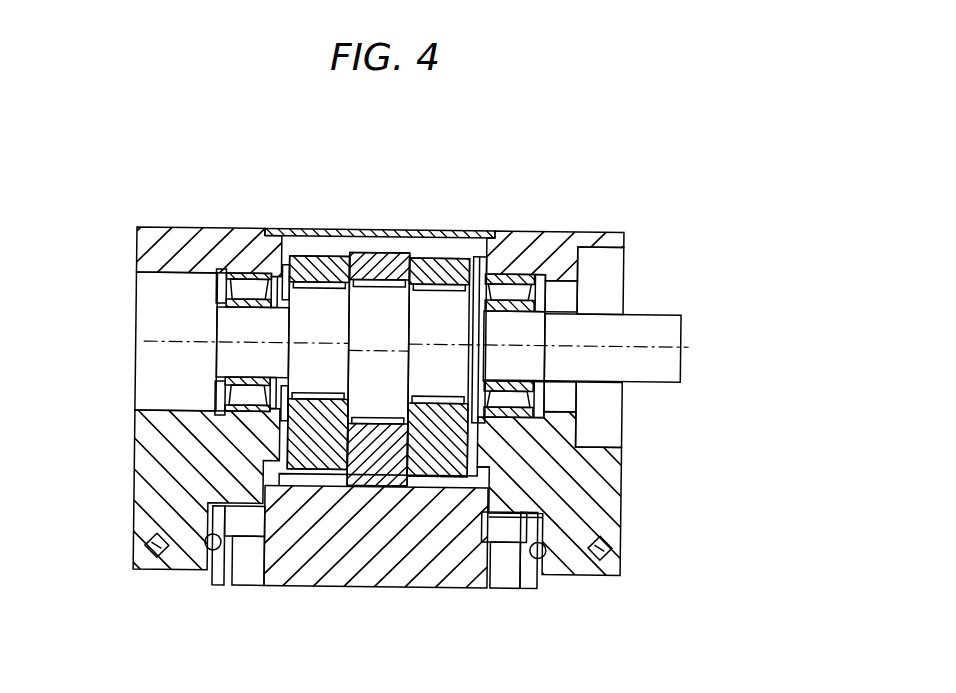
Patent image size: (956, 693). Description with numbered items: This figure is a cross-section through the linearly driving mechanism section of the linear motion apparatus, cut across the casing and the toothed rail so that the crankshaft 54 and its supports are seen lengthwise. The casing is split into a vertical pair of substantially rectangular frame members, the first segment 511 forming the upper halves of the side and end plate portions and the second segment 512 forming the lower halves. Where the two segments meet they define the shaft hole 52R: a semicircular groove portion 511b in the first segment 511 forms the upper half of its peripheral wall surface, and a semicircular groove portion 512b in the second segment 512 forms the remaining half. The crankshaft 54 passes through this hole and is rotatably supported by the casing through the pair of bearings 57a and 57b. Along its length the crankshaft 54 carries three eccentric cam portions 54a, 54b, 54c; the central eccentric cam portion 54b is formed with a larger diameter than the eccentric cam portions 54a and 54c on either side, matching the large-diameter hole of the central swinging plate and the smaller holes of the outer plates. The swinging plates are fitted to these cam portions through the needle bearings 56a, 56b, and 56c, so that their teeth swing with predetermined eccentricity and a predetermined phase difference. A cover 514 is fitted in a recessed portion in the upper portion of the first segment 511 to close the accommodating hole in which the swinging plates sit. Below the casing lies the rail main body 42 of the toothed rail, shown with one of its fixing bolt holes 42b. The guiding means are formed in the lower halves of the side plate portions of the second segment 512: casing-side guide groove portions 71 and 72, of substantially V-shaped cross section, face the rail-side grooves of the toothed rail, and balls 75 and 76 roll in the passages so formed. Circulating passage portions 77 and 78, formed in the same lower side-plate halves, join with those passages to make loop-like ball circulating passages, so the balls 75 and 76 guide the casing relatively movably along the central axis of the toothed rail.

The first segment 511 is at (147, 243).
The semicircular groove portion 511b is at (560, 283).
The second segment 512 is at (600, 467).
The semicircular groove portion 512b is at (560, 412).
The cover 514 is at (376, 232).
The shaft hole 52R is at (195, 330).
The crankshaft 54 is at (648, 333).
The eccentric cam portion 54a is at (332, 383).
The central eccentric cam portion 54b is at (393, 395).
The eccentric cam portion 54c is at (452, 382).
The needle bearing 56a is at (316, 288).
The needle bearing 56b is at (377, 287).
The needle bearing 56c is at (437, 289).
The bearing 57a is at (256, 290).
The bearing 57b is at (507, 293).
The rail main body 42 is at (300, 545).
The fixing bolt hole 42b is at (500, 575).
The casing-side guide groove portion 71 is at (198, 537).
The casing-side guide groove portion 72 is at (557, 540).
The ball 75 is at (225, 580).
The ball 76 is at (532, 560).
The circulating passage portion 77 is at (150, 532).
The circulating passage portion 78 is at (605, 547).